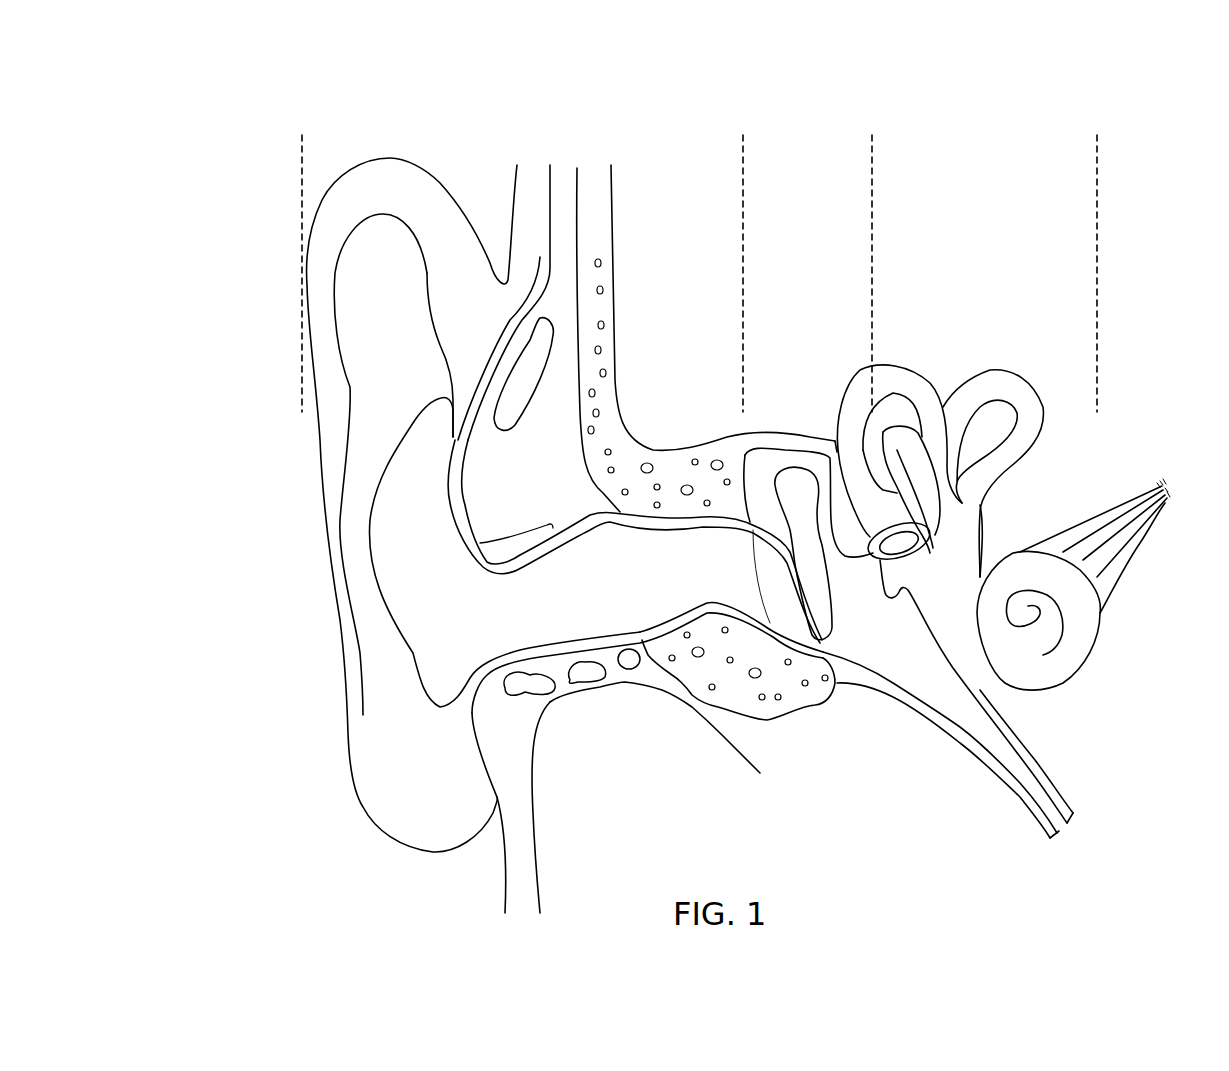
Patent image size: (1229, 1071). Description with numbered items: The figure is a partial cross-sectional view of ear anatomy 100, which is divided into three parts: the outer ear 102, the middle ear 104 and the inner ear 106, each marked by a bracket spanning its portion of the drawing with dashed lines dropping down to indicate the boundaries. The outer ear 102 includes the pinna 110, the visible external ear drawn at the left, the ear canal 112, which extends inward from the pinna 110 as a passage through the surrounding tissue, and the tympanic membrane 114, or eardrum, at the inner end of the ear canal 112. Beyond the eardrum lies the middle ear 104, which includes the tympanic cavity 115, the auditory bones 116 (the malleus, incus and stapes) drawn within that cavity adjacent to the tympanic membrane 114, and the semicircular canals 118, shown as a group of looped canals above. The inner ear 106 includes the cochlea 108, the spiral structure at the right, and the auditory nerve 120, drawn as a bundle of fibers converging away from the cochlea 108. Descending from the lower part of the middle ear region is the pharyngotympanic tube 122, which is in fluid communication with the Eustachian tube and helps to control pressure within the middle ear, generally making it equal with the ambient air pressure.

The ear anatomy 100 is at (250, 182).
The outer ear 102 is at (743, 128).
The middle ear 104 is at (863, 127).
The inner ear 106 is at (1097, 127).
The cochlea 108 is at (1037, 640).
The pinna 110 is at (357, 487).
The ear canal 112 is at (592, 607).
The tympanic membrane 114 is at (770, 573).
The tympanic cavity 115 is at (853, 620).
The auditory bones 116 is at (795, 488).
The semicircular canals 118 is at (995, 387).
The auditory nerve 120 is at (1095, 540).
The pharyngotympanic tube 122 is at (1020, 773).